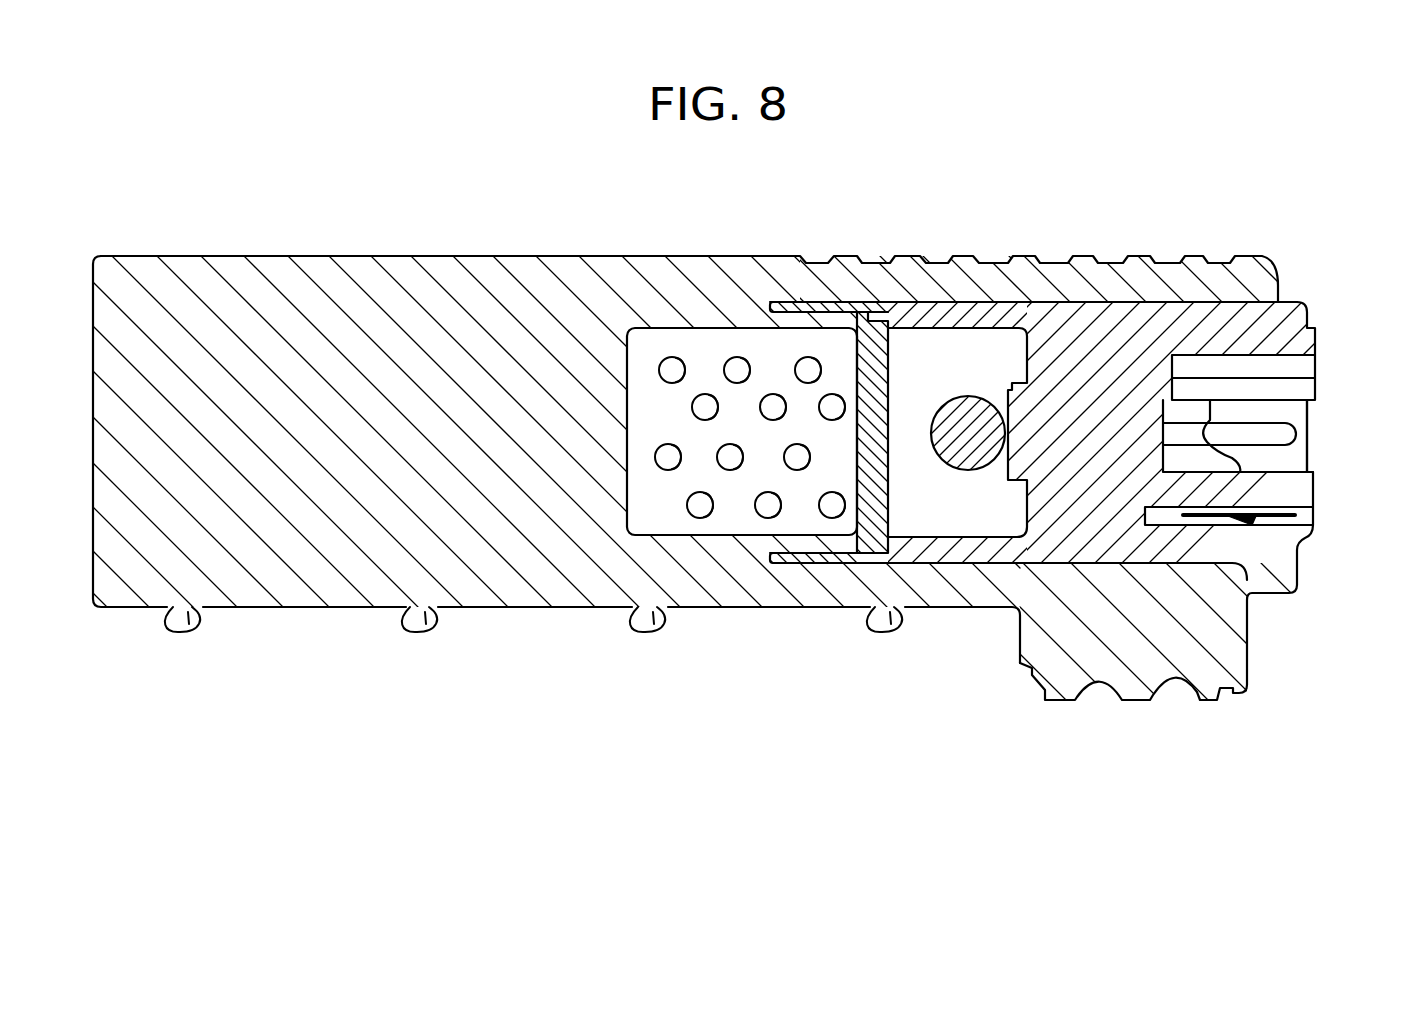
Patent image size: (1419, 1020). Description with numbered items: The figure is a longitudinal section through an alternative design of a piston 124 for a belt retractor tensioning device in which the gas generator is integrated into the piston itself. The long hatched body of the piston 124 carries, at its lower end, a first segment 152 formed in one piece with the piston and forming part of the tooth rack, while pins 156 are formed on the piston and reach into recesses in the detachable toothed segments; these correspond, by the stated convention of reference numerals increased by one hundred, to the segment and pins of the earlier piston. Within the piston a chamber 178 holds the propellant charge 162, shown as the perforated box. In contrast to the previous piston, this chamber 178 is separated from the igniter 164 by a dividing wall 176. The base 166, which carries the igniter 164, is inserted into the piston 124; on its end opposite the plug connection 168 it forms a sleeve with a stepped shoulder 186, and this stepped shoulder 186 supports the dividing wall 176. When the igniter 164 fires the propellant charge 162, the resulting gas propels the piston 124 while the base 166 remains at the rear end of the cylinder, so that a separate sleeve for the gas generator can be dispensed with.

The piston 124 is at (287, 278).
The first segment 152 is at (1068, 683).
The pins 156 is at (190, 630).
The propellant charge 162 is at (717, 512).
The igniter 164 is at (967, 407).
The base 166 is at (1107, 347).
The plug connection 168 is at (1313, 392).
The dividing wall 176 is at (900, 323).
The chamber for the propellant charge 178 is at (720, 345).
The stepped shoulder 186 is at (873, 543).